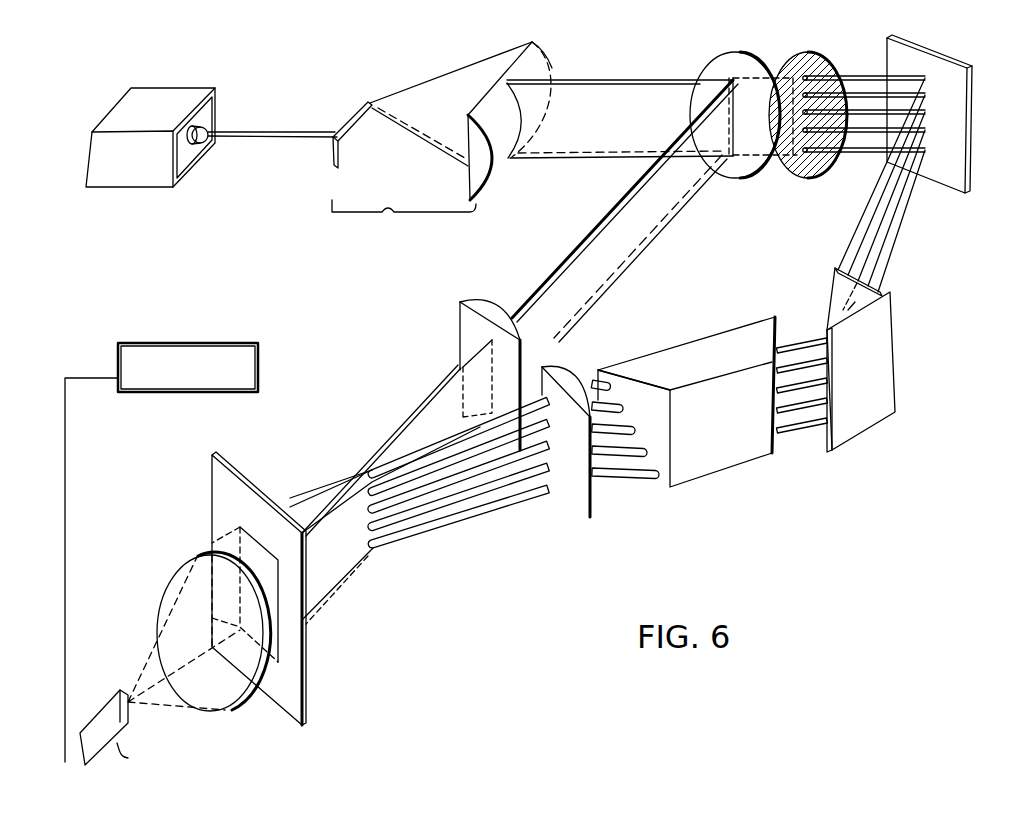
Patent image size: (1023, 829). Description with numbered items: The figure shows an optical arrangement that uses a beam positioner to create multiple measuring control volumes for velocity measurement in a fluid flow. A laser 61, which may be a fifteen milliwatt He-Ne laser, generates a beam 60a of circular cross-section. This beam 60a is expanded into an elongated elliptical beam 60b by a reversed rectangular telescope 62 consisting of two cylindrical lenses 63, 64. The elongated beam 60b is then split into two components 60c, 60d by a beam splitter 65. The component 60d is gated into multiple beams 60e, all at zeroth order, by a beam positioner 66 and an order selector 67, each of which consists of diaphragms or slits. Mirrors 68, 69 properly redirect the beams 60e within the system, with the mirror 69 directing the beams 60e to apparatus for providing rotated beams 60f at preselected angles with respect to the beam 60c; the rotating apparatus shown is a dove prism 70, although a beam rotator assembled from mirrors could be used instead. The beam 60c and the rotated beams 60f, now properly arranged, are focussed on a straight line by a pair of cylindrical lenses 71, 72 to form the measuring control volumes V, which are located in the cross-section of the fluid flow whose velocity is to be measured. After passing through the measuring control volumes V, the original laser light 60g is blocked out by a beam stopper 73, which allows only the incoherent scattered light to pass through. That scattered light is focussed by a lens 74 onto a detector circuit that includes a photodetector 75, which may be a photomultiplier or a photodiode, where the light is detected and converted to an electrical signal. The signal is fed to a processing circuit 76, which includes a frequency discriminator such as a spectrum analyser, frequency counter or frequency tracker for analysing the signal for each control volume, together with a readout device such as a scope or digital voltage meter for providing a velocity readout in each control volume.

The laser 61 is at (183, 89).
The beam 60a is at (275, 131).
The reversed rectangular telescope 62 is at (404, 222).
The cylindrical lens 63 is at (350, 150).
The cylindrical lens 64 is at (468, 192).
The elongated elliptical beam 60b is at (620, 80).
The beam component 60c is at (620, 193).
The beam splitter 65 is at (740, 180).
The beam component 60d is at (795, 70).
The beam positioner 66 is at (832, 67).
The multiple beams 60e is at (873, 155).
The order selector 67 is at (883, 288).
The mirror 68 is at (958, 60).
The mirror 69 is at (893, 320).
The dove prism 70 is at (760, 460).
The cylindrical lens 71 is at (490, 306).
The cylindrical lens 72 is at (583, 377).
The rotated beams 60f is at (608, 488).
The measuring control volumes V is at (380, 556).
The original laser light 60g is at (345, 588).
The beam stopper 73 is at (305, 703).
The lens 74 is at (222, 705).
The photodetector 75 is at (108, 703).
The processing circuit 76 is at (258, 380).